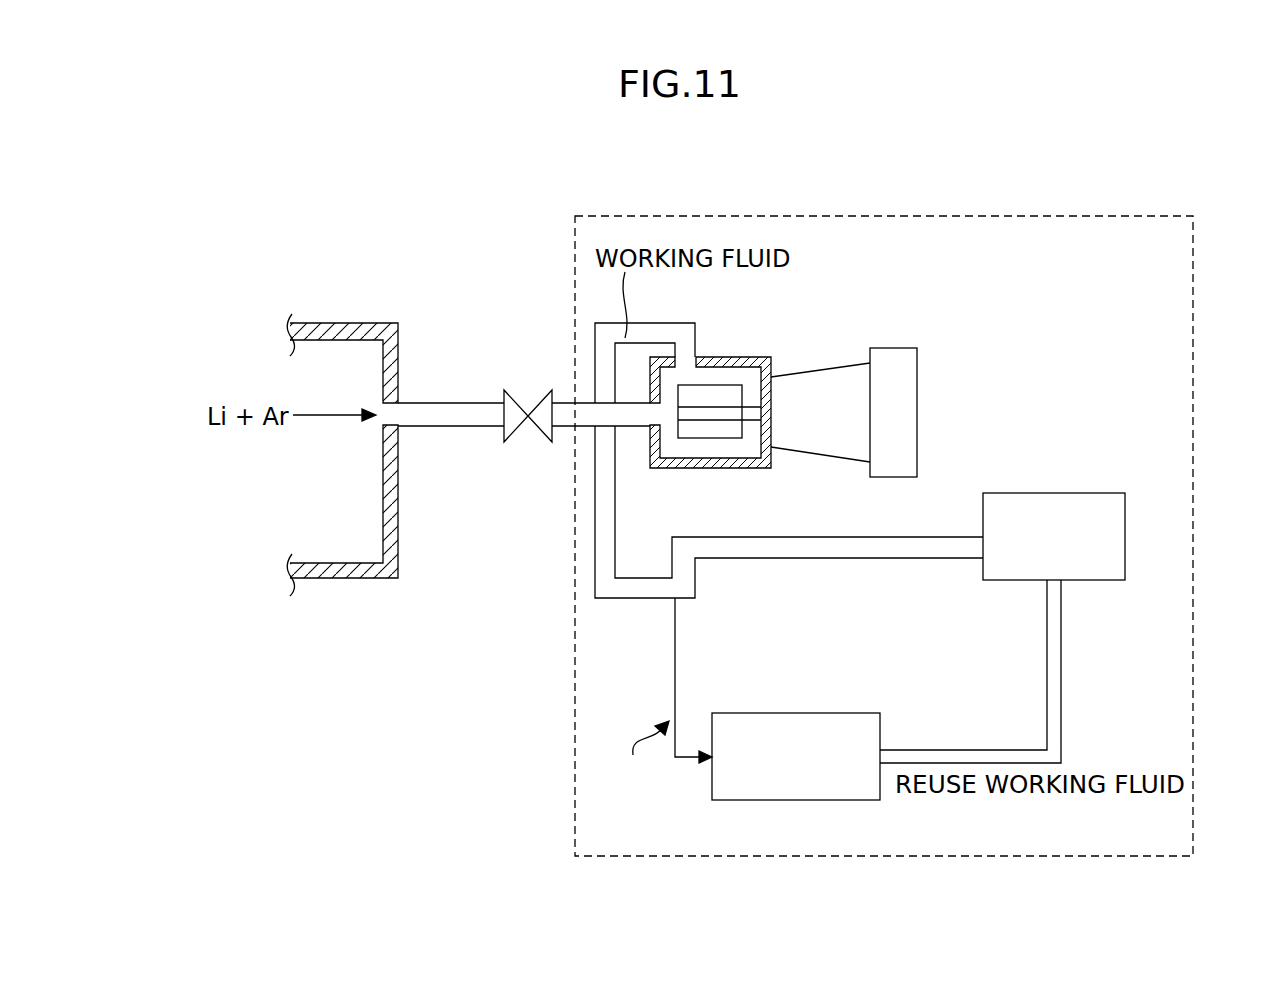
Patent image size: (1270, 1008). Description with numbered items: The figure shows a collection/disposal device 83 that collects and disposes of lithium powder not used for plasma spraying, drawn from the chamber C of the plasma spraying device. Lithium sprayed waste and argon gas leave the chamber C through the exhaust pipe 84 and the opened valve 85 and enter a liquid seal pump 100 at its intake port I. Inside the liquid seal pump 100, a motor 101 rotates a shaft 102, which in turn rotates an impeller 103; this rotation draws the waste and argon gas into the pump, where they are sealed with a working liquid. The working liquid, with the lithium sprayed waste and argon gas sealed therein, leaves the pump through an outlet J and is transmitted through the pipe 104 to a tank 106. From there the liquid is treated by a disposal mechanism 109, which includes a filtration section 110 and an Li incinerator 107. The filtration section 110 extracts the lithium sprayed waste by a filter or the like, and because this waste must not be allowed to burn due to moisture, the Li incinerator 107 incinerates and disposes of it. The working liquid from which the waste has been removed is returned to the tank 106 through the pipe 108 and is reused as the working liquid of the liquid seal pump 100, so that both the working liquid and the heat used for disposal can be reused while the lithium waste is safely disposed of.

The collection/disposal device 83 is at (1018, 196).
The chamber C is at (350, 323).
The exhaust pipe 84 is at (458, 403).
The valve 85 is at (517, 397).
The pipe 104 is at (595, 535).
The liquid seal pump 100 is at (742, 352).
The outlet J is at (687, 360).
The intake port I is at (658, 413).
The impeller 103 is at (694, 430).
The shaft 102 is at (750, 414).
The motor 101 is at (825, 365).
The tank 106 is at (1063, 493).
The pipe 108 is at (1062, 672).
The Li incinerator 107 is at (797, 800).
The filtration section 110 is at (676, 652).
The disposal mechanism 109 is at (639, 753).